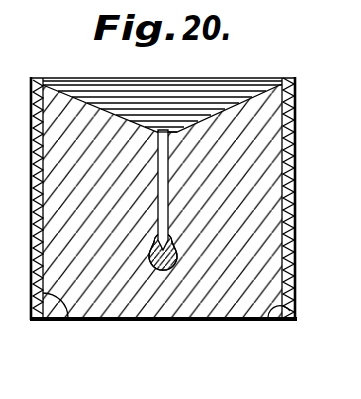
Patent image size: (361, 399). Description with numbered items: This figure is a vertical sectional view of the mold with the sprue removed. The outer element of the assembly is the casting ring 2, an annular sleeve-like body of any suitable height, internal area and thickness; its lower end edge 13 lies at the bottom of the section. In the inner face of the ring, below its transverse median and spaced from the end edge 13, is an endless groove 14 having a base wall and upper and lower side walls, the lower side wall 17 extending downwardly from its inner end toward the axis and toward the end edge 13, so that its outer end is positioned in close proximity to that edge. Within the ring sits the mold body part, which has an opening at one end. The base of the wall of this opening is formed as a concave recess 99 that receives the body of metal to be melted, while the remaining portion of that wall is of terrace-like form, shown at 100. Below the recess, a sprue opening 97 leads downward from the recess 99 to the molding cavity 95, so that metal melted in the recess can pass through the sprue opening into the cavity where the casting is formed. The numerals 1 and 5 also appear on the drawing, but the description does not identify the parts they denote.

The casting ring 2 is at (298, 165).
The lining 1 is at (43, 239).
The inner wall 5 is at (43, 285).
The end edge 13 is at (41, 321).
The endless groove 14 is at (68, 318).
The lower side wall 17 is at (268, 317).
The terrace-like portion 100 is at (112, 90).
The concave recess 99 is at (160, 128).
The sprue opening 97 is at (168, 158).
The molding cavity 95 is at (179, 252).